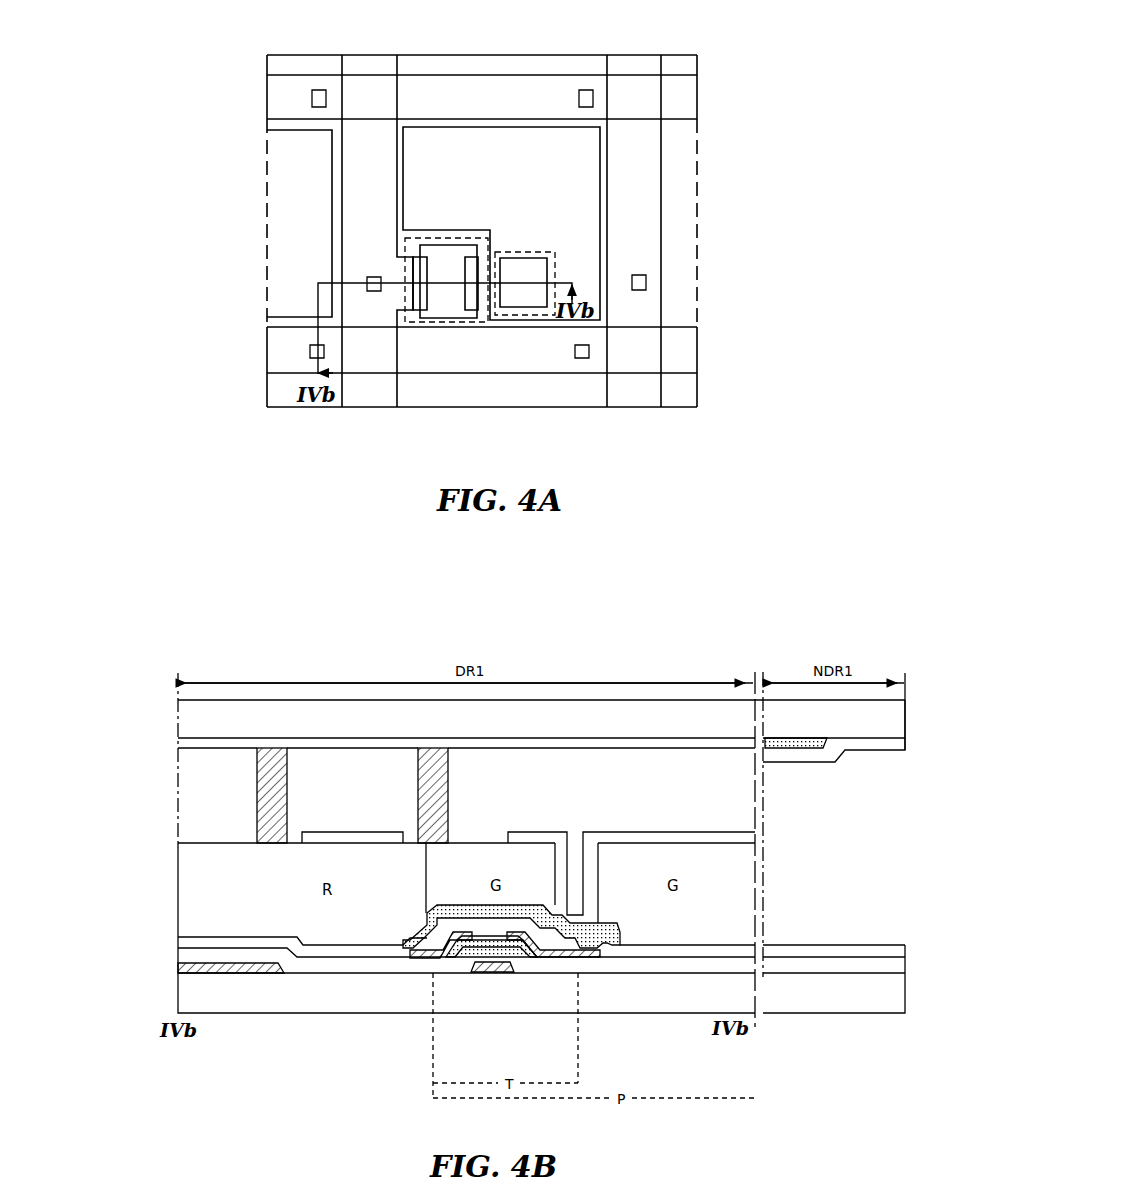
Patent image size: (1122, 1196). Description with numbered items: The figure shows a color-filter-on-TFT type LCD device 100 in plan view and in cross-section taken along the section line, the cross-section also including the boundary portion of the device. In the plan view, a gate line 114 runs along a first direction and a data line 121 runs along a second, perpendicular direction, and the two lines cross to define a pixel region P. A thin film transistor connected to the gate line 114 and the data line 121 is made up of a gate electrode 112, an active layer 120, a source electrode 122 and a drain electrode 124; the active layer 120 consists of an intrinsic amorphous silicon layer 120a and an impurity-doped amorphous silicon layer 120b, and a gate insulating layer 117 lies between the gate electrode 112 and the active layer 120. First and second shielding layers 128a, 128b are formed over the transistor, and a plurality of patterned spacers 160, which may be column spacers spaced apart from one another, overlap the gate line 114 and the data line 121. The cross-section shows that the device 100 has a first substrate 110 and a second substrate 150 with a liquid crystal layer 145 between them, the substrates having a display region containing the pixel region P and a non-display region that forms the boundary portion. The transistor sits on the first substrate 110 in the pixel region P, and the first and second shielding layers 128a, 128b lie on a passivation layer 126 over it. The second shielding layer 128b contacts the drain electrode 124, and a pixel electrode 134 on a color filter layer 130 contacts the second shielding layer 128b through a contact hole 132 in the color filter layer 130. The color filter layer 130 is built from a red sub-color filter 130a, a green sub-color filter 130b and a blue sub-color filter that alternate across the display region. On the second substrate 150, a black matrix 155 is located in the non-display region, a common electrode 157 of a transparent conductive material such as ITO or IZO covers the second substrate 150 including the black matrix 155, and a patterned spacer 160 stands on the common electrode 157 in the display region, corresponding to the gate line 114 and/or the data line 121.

In FIG. 4A, the COT type LCD device 100 is at (712, 70).
In FIG. 4B, the COT type LCD device 100 is at (646, 668).
In FIG. 4B, the first substrate 110 is at (270, 1005).
In FIG. 4A, the gate electrode 112 is at (422, 256).
In FIG. 4B, the gate electrode 112 is at (482, 958).
In FIG. 4A, the gate line 114 is at (268, 353).
In FIG. 4B, the gate line 114 is at (224, 968).
In FIG. 4B, the gate insulating layer 117 is at (292, 968).
In FIG. 4A, the active layer 120 is at (445, 308).
In FIG. 4B, the active layer 120 is at (512, 1004).
In FIG. 4B, the intrinsic amorphous silicon layer 120a is at (503, 948).
In FIG. 4B, the impurity-doped amorphous silicon layer 120b is at (538, 945).
In FIG. 4A, the data line 121 is at (642, 195).
In FIG. 4B, the data line 121 is at (417, 962).
In FIG. 4A, the source electrode 122 is at (447, 228).
In FIG. 4B, the source electrode 122 is at (470, 968).
In FIG. 4A, the drain electrode 124 is at (520, 268).
In FIG. 4B, the drain electrode 124 is at (627, 944).
In FIG. 4B, the passivation layer 126 is at (323, 952).
In FIG. 4A, the first shielding layer 128a is at (450, 322).
In FIG. 4B, the first shielding layer 128a is at (418, 952).
In FIG. 4A, the second shielding layer 128b is at (553, 313).
In FIG. 4B, the second shielding layer 128b is at (620, 953).
In FIG. 4B, the color filter layer 130 is at (469, 1002).
In FIG. 4B, the red sub-color filter 130a is at (178, 890).
In FIG. 4B, the green sub-color filter 130b is at (798, 904).
In FIG. 4B, the contact hole 132 is at (579, 843).
In FIG. 4A, the pixel electrode 134 is at (605, 140).
In FIG. 4B, the pixel electrode 134 is at (338, 838).
In FIG. 4B, the liquid crystal layer 145 is at (746, 785).
In FIG. 4B, the second substrate 150 is at (513, 727).
In FIG. 4B, the black matrix 155 is at (817, 749).
In FIG. 4B, the common electrode 157 is at (358, 740).
In FIG. 4A, the patterned spacer 160 is at (595, 353).
In FIG. 4B, the patterned spacer 160 is at (262, 805).
In FIG. 4A, the pixel region P is at (549, 239).